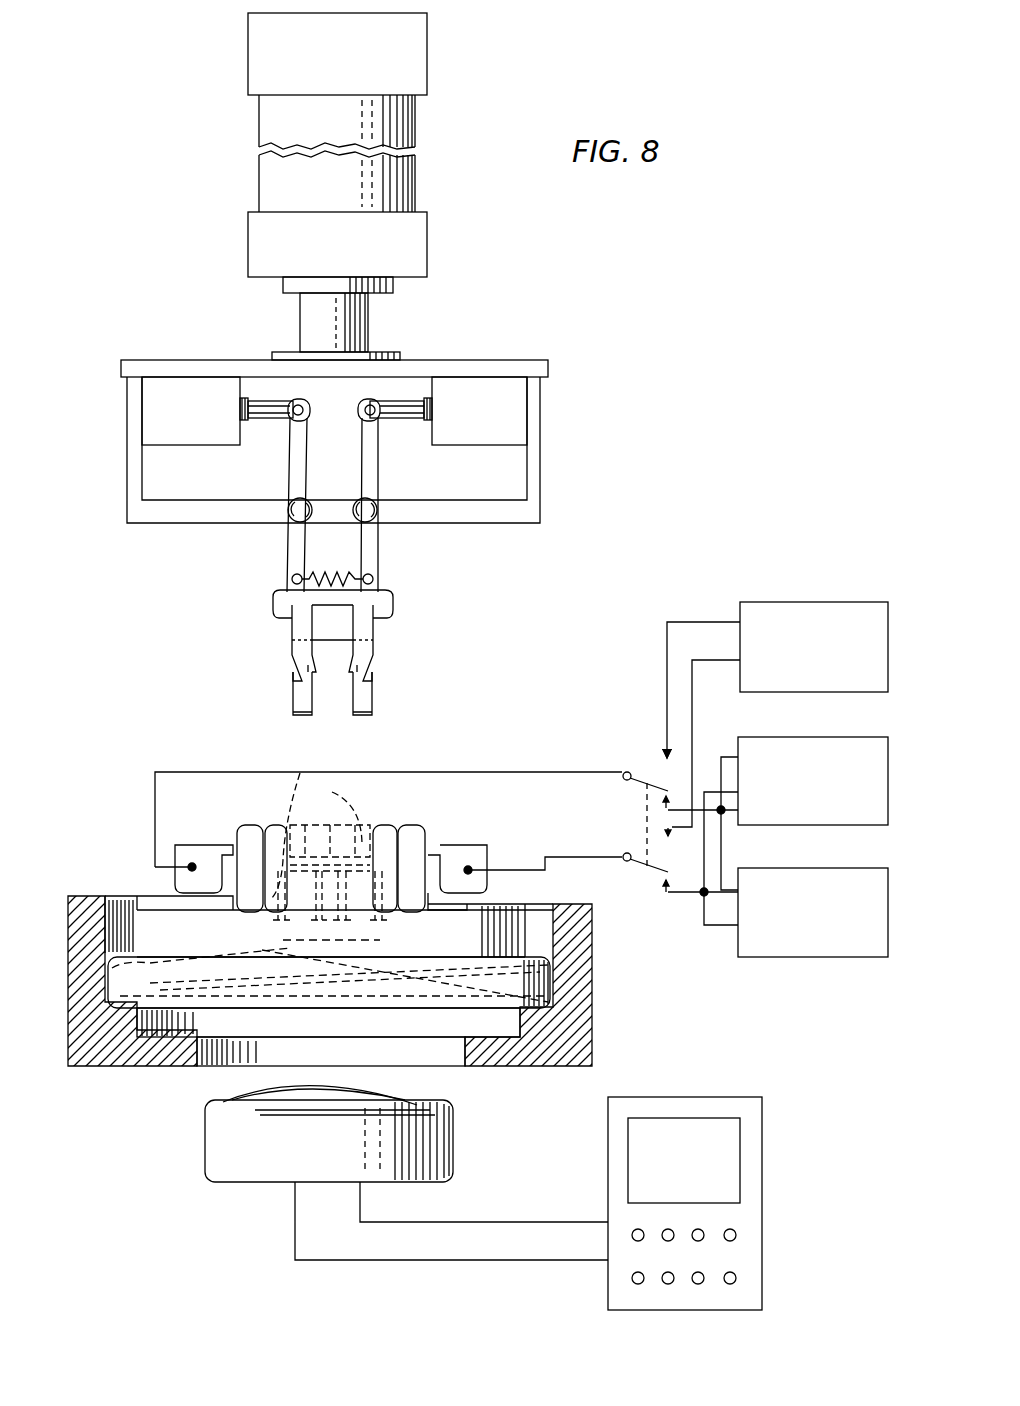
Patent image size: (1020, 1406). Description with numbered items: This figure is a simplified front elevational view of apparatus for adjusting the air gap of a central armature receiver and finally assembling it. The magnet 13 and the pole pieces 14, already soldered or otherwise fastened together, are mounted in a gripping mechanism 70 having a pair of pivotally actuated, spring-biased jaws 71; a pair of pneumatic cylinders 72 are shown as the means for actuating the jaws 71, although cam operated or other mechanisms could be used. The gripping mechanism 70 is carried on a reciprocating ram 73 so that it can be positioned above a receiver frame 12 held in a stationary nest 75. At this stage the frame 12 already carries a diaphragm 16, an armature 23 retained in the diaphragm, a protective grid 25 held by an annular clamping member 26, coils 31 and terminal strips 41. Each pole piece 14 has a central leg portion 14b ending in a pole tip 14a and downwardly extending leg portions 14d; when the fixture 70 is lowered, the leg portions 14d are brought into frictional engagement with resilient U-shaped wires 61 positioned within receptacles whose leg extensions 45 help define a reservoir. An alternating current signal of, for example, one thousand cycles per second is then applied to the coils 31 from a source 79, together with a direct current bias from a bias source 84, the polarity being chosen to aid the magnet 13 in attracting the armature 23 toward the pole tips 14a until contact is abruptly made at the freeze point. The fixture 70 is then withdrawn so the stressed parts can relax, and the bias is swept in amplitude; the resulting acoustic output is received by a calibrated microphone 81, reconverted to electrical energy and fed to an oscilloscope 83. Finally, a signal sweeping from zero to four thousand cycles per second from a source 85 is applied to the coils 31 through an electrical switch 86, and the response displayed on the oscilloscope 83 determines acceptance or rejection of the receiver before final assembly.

The gripping mechanism 70 is at (170, 358).
The ram 73 is at (362, 318).
The pneumatic cylinders 72 is at (150, 412).
The jaws 71 is at (370, 557).
The magnet 13 is at (322, 628).
The downwardly extending leg portions 14d is at (297, 657).
The central leg portion 14b is at (296, 707).
The pole tip 14a is at (300, 718).
The pole pieces 14 is at (330, 845).
The U-shaped wires 61 is at (296, 790).
The leg extensions 45 is at (268, 836).
The coils 31 is at (252, 826).
The terminal strips 41 is at (192, 850).
The stationary nest 75 is at (82, 905).
The frame member 12 is at (500, 915).
The diaphragm 16 is at (394, 951).
The armature 23 is at (280, 934).
The protective grid 25 is at (262, 975).
The annular clamping member 26 is at (402, 990).
The microphone 81 is at (215, 1146).
The oscilloscope 83 is at (722, 1107).
The source 85 is at (772, 603).
The source 79 is at (795, 738).
The D.C. bias source 84 is at (775, 870).
The electrical switch 86 is at (660, 815).